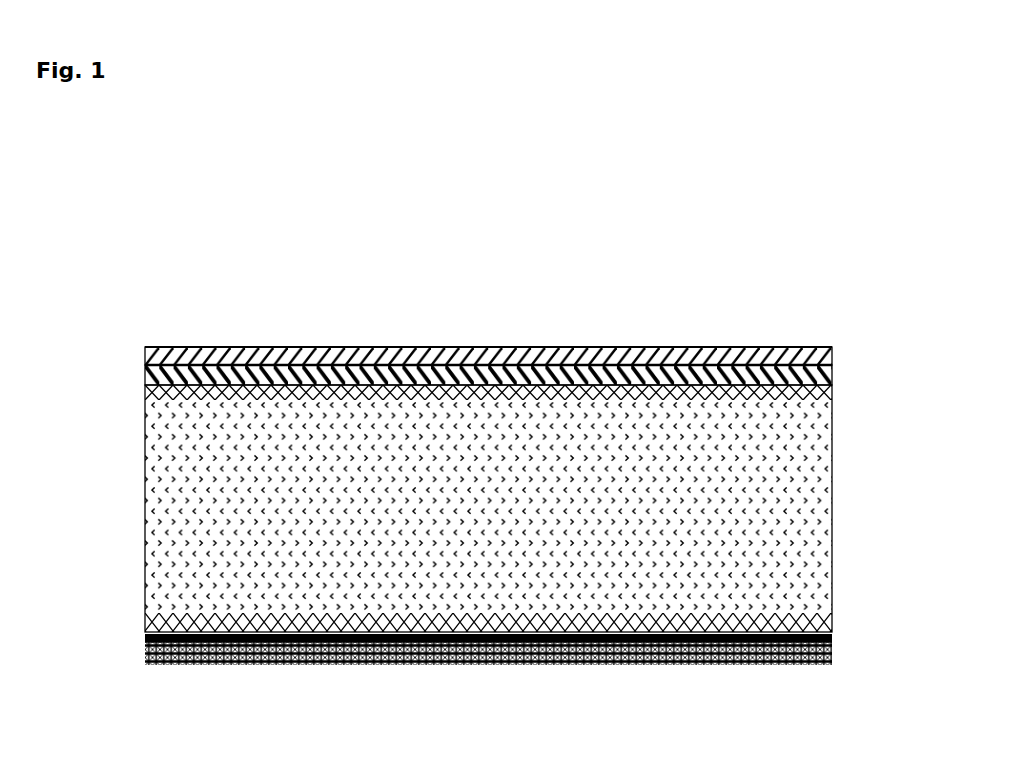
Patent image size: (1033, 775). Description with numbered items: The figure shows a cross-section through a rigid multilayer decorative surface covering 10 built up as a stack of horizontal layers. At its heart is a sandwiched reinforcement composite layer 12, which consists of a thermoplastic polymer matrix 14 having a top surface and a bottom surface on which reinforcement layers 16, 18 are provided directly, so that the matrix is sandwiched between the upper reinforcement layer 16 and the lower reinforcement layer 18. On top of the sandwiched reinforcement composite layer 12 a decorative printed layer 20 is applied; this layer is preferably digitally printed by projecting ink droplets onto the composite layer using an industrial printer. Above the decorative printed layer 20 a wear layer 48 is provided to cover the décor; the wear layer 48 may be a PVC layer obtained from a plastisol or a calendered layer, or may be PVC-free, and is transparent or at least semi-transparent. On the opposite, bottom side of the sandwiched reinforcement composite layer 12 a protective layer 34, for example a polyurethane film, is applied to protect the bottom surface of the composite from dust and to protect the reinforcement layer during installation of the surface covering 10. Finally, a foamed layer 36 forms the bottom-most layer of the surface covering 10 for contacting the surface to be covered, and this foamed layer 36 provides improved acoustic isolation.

The rigid multilayer decorative surface covering 10 is at (172, 259).
The sandwiched reinforcement composite layer 12 is at (130, 390).
The thermoplastic polymer matrix 14 is at (833, 515).
The reinforcement layer 16 is at (834, 385).
The reinforcement layer 18 is at (834, 622).
The decorative printed layer 20 is at (834, 365).
The protective layer 34 is at (145, 650).
The foamed layer 36 is at (834, 657).
The wear layer 48 is at (832, 350).